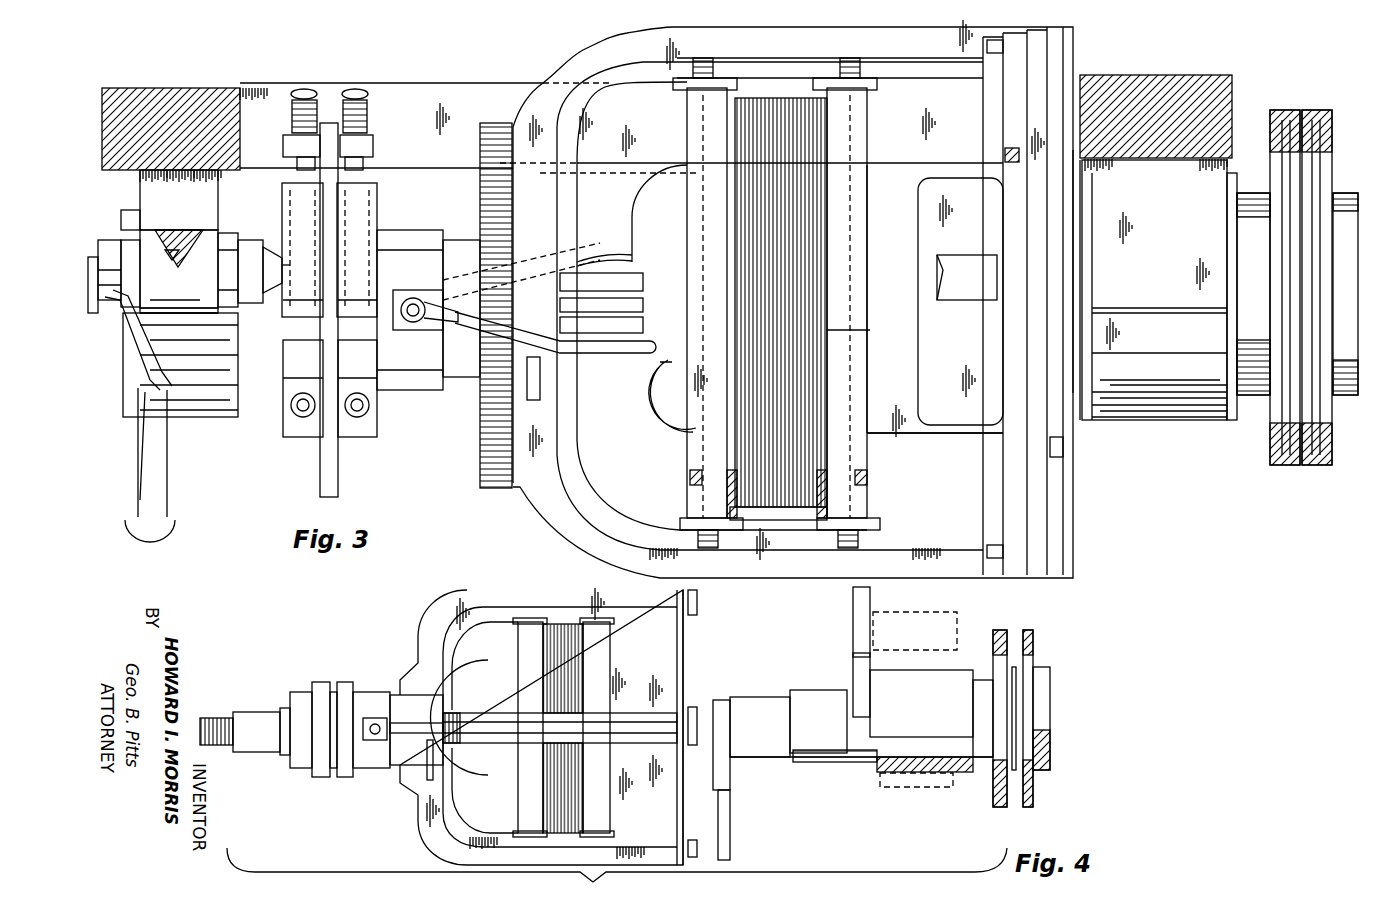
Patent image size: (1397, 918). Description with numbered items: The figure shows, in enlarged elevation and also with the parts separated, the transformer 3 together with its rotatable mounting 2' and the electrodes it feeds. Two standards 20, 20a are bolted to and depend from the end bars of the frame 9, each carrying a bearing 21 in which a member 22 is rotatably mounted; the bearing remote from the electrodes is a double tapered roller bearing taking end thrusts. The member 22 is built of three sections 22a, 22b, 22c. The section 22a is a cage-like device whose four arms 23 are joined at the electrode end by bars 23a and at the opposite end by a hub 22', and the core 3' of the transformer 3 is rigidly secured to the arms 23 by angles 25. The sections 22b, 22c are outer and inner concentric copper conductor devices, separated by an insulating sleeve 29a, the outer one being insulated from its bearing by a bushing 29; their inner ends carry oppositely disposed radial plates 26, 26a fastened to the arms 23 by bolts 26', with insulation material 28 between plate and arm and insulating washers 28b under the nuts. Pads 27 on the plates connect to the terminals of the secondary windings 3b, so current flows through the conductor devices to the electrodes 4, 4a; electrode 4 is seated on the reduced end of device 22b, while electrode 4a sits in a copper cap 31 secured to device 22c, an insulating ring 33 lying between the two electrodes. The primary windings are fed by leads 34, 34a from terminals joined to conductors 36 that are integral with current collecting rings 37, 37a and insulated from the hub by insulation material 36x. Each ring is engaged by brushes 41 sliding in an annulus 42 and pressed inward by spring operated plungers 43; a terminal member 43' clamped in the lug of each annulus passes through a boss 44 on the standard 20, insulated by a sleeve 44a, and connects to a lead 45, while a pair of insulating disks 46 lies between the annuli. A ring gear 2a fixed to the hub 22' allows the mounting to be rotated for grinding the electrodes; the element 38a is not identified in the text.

In FIG. 3, the mounting 2' is at (793, 302).
In FIG. 3, the ring gear 2a is at (480, 478).
In FIG. 3, the transformer 3 is at (938, 301).
In FIG. 3, the core 3' is at (857, 332).
In FIG. 3, the secondary windings 3b is at (660, 410).
In FIG. 3, the electrode 4 is at (1288, 470).
In FIG. 4, the electrode 4 is at (1002, 640).
In FIG. 3, the electrode 4a is at (1312, 470).
In FIG. 4, the electrode 4a is at (1028, 640).
In FIG. 3, the frame 9 is at (1148, 95).
In FIG. 3, the standard 20 is at (205, 410).
In FIG. 3, the standard 20a is at (1215, 185).
In FIG. 3, the bearing 21 is at (122, 225).
In FIG. 3, the member 22 is at (935, 477).
In FIG. 3, the hub 22' is at (461, 275).
In FIG. 4, the hub 22' is at (416, 721).
In FIG. 3, the section 22a is at (615, 545).
In FIG. 4, the section 22a is at (470, 830).
In FIG. 4, the section 22b is at (910, 680).
In FIG. 4, the section 22c is at (758, 705).
In FIG. 3, the arm 23 is at (912, 52).
In FIG. 4, the arm 23 is at (545, 595).
In FIG. 4, the bar 23a is at (670, 650).
In FIG. 3, the angle 25 is at (850, 472).
In FIG. 3, the plate 26 is at (1066, 169).
In FIG. 4, the plate 26 is at (841, 622).
In FIG. 3, the bolt 26' is at (972, 318).
In FIG. 3, the plate 26a is at (1067, 452).
In FIG. 4, the plate 26a is at (730, 825).
In FIG. 4, the pad 27 is at (853, 665).
In FIG. 4, the insulation material 28 is at (700, 600).
In FIG. 3, the washer 28b is at (1000, 262).
In FIG. 4, the bushing 29 is at (918, 772).
In FIG. 4, the sleeve 29a is at (828, 762).
In FIG. 3, the cap 31 is at (1348, 210).
In FIG. 4, the cap 31 is at (1050, 690).
In FIG. 4, the ring 33 is at (1014, 795).
In FIG. 3, the lead 34 is at (600, 352).
In FIG. 3, the lead 34a is at (590, 258).
In FIG. 4, the conductor 36 is at (374, 718).
In FIG. 3, the insulation material 36x is at (415, 294).
In FIG. 4, the current collecting ring 37 is at (345, 682).
In FIG. 4, the current collecting ring 37a is at (320, 682).
In FIG. 3, the lever 38a is at (436, 266).
In FIG. 3, the brush 41 is at (290, 172).
In FIG. 3, the annulus 42 is at (377, 205).
In FIG. 3, the spring operated plunger 43 is at (313, 129).
In FIG. 3, the terminal member 43' is at (271, 292).
In FIG. 3, the boss 44 is at (180, 312).
In FIG. 3, the sleeve 44a is at (179, 269).
In FIG. 3, the lead 45 is at (140, 423).
In FIG. 3, the annular disk 46 is at (320, 488).